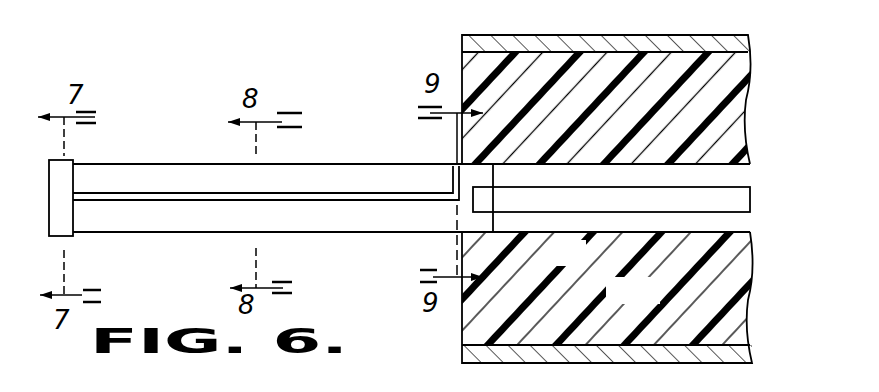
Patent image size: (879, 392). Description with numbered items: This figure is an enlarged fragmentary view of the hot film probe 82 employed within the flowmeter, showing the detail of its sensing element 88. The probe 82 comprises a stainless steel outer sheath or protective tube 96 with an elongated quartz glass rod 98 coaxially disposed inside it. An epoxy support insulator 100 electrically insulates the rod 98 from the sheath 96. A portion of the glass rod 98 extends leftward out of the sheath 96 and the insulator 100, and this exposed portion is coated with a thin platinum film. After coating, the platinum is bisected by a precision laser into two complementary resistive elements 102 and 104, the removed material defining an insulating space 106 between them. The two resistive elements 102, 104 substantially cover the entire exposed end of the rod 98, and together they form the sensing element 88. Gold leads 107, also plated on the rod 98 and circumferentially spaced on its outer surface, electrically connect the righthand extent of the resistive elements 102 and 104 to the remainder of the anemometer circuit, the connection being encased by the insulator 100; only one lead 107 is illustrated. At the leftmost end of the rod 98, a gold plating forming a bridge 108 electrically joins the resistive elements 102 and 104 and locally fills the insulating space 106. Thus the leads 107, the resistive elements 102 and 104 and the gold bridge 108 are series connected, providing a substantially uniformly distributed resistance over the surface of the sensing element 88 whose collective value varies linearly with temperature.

The hot film probe 82 is at (175, 100).
The sensing element 88 is at (157, 167).
The outer sheath 96 is at (623, 360).
The quartz glass rod 98 is at (536, 234).
The epoxy support insulator 100 is at (657, 305).
The resistive element 102 is at (320, 175).
The resistive element 104 is at (377, 230).
The insulating space 106 is at (450, 164).
The gold leads 107 is at (605, 198).
The gold bridge 108 is at (67, 213).